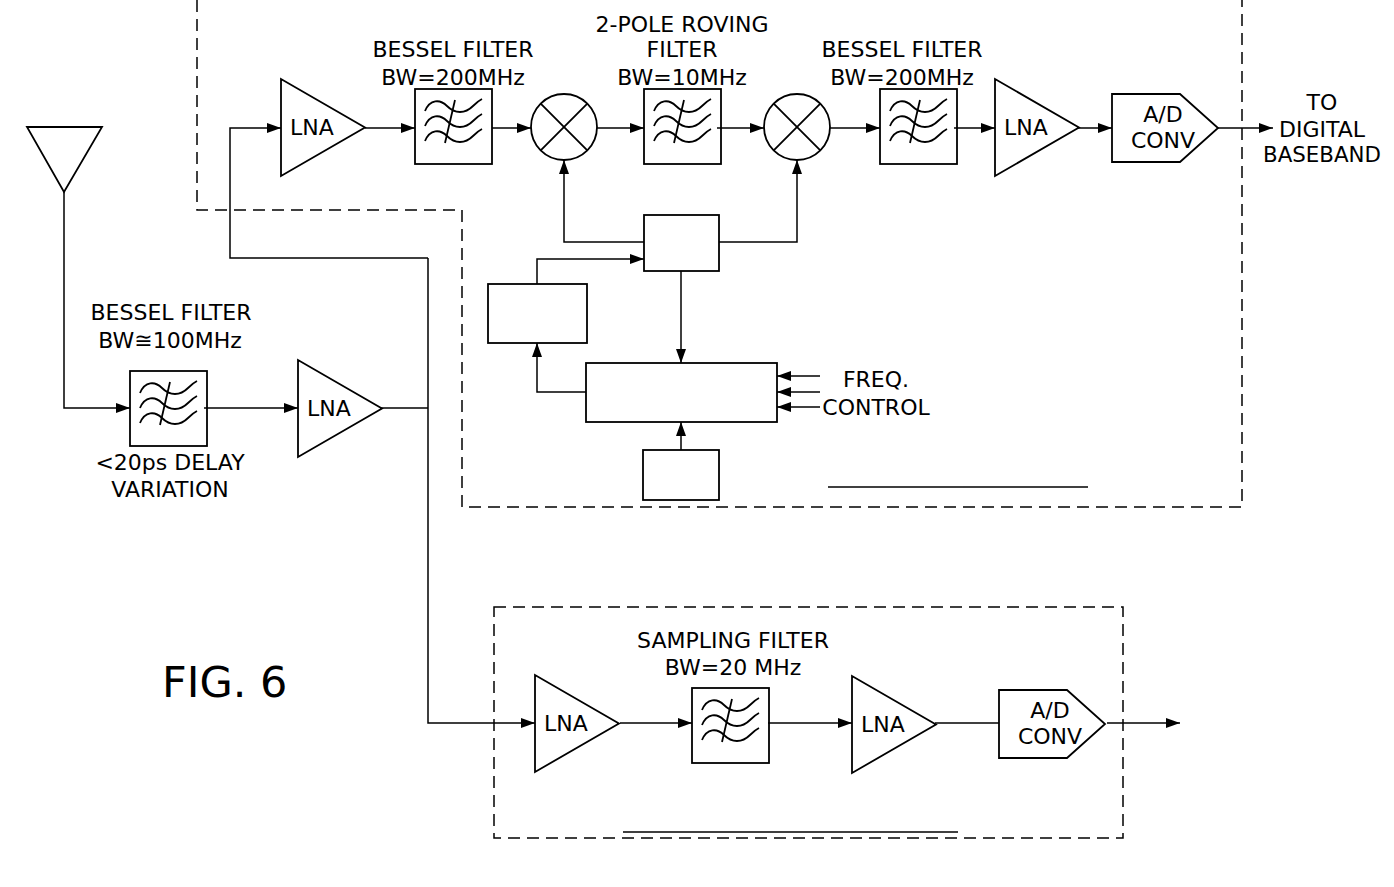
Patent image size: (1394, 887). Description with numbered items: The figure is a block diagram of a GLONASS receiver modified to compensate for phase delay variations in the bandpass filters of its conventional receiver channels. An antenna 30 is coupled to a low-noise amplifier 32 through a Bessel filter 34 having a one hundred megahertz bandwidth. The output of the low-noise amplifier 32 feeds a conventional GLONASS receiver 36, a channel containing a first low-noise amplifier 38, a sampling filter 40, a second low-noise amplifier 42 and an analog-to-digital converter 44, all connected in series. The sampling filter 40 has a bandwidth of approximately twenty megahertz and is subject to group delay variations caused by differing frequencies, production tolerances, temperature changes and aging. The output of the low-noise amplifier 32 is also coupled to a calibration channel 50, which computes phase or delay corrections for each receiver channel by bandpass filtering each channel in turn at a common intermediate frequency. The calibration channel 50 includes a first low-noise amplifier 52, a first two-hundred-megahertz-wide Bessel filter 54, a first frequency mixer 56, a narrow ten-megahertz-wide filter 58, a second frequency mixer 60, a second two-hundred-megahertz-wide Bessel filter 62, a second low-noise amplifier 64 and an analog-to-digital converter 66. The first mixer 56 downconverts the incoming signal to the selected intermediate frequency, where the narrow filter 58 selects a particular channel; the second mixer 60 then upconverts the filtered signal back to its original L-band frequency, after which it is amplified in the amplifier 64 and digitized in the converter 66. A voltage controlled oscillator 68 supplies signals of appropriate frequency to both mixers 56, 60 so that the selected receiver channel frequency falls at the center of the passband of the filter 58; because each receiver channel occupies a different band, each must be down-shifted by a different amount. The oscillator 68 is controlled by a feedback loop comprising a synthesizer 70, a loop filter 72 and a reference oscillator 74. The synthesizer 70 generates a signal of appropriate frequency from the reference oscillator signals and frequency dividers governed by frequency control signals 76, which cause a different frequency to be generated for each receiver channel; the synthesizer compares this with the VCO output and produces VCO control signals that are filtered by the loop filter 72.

The antenna 30 is at (64, 127).
The low-noise amplifier 32 is at (310, 362).
The Bessel filter 34 is at (204, 385).
The conventional GLONASS receiver 36 is at (939, 607).
The first low-noise amplifier 38 is at (560, 678).
The sampling filter 40 is at (710, 761).
The second low-noise amplifier 42 is at (875, 685).
The analog-to-digital converter 44 is at (1012, 690).
The calibration channel 50 is at (1037, 507).
The first low-noise amplifier 52 is at (283, 78).
The first 200 MHz wide Bessel filter 54 is at (425, 165).
The first frequency mixer 56 is at (574, 159).
The narrow 10 MHz wide filter 58 is at (653, 165).
The second frequency mixer 60 is at (809, 157).
The second 200 MHz wide Bessel filter 62 is at (922, 165).
The second low-noise amplifier 64 is at (1010, 78).
The analog-to-digital converter 66 is at (1130, 94).
The voltage controlled oscillator 68 is at (697, 271).
The synthesizer 70 is at (613, 363).
The loop filter 72 is at (493, 283).
The reference oscillator 74 is at (652, 450).
The frequency control signals 76 is at (805, 360).